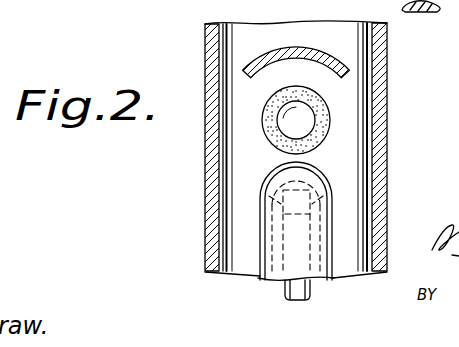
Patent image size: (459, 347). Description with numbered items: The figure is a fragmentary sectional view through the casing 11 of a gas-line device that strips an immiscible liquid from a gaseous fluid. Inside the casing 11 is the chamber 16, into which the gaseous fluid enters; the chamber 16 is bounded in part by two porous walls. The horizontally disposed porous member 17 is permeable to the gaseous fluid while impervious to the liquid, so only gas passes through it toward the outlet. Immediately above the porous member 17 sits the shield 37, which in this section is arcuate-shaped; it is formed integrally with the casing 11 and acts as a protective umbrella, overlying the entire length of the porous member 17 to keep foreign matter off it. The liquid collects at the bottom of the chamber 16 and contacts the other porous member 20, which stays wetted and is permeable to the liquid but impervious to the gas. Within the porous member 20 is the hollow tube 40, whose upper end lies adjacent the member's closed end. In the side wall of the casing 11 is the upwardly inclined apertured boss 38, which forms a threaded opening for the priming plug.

The casing 11 is at (388, 162).
The shield 37 is at (338, 48).
The porous member 17 is at (322, 111).
The chamber 16 is at (334, 162).
The apertured boss 38 is at (300, 160).
The porous member 20 is at (282, 190).
The hollow tube 40 is at (310, 288).